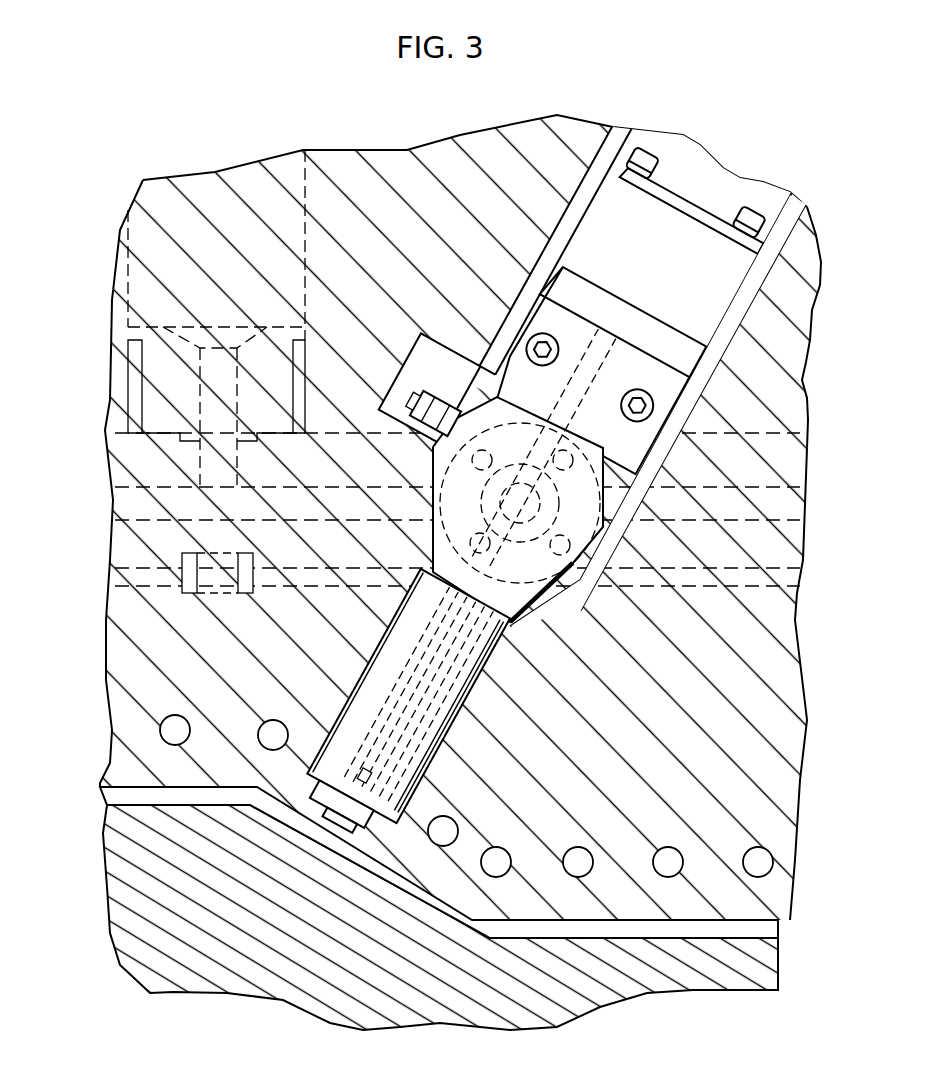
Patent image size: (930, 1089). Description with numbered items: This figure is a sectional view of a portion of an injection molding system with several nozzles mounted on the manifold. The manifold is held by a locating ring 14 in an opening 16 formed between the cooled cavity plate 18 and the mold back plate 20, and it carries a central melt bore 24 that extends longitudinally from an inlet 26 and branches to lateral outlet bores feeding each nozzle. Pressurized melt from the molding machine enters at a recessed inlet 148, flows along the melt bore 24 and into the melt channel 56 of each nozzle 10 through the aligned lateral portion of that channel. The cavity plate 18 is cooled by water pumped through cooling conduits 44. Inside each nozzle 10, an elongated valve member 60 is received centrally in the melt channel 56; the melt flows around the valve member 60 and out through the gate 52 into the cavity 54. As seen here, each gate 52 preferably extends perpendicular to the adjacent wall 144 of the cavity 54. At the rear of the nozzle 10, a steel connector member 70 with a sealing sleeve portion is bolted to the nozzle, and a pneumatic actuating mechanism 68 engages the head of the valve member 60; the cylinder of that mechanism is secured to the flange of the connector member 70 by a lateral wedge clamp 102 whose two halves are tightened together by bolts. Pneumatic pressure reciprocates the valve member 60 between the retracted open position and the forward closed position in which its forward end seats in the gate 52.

The nozzle 10 is at (453, 673).
The locating ring 14 is at (180, 593).
The opening 16 is at (135, 570).
The cavity plate 18 is at (778, 726).
The mold back plate 20 is at (398, 165).
The central melt bore 24 is at (133, 501).
The inlet 26 is at (222, 443).
The cooling conduits 44 is at (773, 860).
The gate 52 is at (340, 829).
The cavity 54 is at (778, 924).
The melt channel 56 is at (428, 765).
The valve member 60 is at (407, 703).
The pneumatic actuating mechanism 68 is at (802, 378).
The connector member 70 is at (636, 494).
The lateral wedge clamp 102 is at (797, 520).
The wall 144 is at (112, 787).
The recessed inlet 148 is at (217, 330).